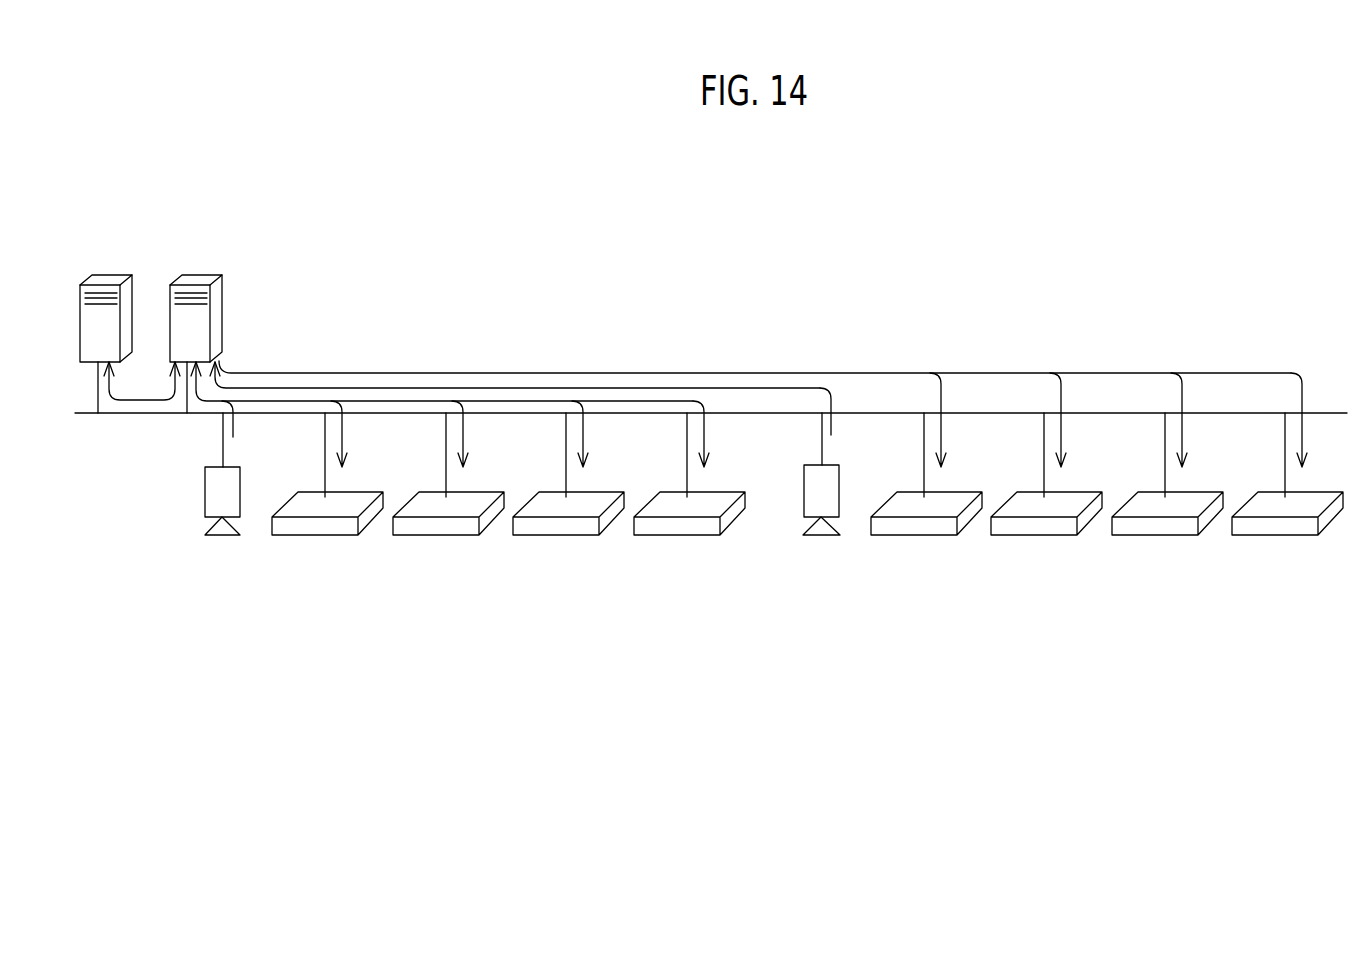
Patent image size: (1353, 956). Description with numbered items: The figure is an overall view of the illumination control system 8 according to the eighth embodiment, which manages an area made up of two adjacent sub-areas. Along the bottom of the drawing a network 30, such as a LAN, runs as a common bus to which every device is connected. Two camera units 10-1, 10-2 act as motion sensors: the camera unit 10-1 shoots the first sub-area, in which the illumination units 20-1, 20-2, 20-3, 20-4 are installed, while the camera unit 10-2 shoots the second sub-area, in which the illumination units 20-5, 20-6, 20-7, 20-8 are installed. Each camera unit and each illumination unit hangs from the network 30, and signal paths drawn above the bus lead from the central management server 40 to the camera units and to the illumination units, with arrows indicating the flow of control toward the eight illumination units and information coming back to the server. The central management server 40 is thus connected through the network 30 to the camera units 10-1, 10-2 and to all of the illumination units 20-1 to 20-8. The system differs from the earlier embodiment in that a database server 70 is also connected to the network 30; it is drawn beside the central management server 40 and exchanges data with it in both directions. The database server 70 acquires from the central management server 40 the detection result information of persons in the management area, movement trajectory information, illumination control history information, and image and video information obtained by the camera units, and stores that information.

The illumination control system 8 is at (752, 335).
The network 30 is at (1329, 411).
The database server 70 is at (102, 277).
The central management server 40 is at (192, 277).
The camera unit 10-1 is at (222, 535).
The camera unit 10-2 is at (821, 535).
The illumination unit 20-1 is at (326, 535).
The illumination unit 20-2 is at (447, 535).
The illumination unit 20-3 is at (567, 535).
The illumination unit 20-4 is at (688, 535).
The illumination unit 20-5 is at (925, 535).
The illumination unit 20-6 is at (1045, 535).
The illumination unit 20-7 is at (1166, 535).
The illumination unit 20-8 is at (1286, 535).